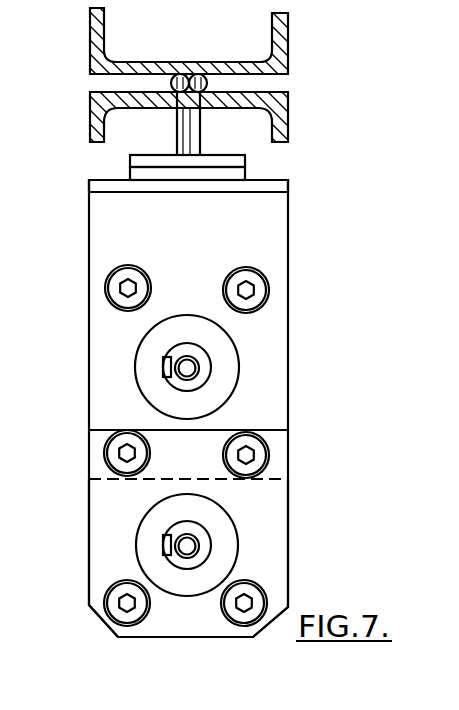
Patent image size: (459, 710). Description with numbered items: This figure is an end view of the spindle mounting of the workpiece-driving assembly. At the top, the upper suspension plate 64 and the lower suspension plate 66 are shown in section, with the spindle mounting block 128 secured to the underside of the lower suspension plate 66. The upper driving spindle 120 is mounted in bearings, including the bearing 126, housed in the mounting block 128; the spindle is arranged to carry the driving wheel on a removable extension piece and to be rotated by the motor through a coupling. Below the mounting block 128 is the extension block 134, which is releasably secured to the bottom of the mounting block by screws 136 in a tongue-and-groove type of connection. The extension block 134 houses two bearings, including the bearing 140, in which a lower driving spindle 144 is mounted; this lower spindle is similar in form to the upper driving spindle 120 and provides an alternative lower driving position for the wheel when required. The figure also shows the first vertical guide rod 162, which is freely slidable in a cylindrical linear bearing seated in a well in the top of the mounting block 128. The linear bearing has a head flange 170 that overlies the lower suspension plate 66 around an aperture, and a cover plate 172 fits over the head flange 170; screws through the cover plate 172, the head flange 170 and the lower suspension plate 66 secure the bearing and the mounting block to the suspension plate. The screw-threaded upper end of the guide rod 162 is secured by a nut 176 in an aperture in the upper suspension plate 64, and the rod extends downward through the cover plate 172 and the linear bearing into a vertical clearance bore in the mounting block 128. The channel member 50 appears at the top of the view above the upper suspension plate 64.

The channel member 50 is at (281, 40).
The upper suspension plate 64 is at (280, 118).
The lower suspension plate 66 is at (102, 186).
The upper driving spindle 120 is at (203, 368).
The bearing 126 is at (220, 348).
The spindle mounting block 128 is at (104, 218).
The extension block 134 is at (265, 514).
The screws 136 is at (116, 465).
The bearing 140 is at (153, 519).
The lower driving spindle 144 is at (172, 561).
The first vertical guide rod 162 is at (202, 129).
The head flange 170 is at (237, 175).
The cover plate 172 is at (130, 157).
The nut 176 is at (192, 73).